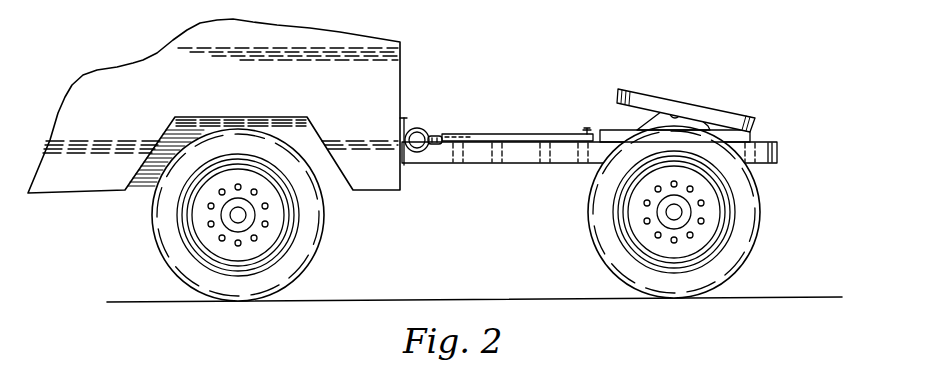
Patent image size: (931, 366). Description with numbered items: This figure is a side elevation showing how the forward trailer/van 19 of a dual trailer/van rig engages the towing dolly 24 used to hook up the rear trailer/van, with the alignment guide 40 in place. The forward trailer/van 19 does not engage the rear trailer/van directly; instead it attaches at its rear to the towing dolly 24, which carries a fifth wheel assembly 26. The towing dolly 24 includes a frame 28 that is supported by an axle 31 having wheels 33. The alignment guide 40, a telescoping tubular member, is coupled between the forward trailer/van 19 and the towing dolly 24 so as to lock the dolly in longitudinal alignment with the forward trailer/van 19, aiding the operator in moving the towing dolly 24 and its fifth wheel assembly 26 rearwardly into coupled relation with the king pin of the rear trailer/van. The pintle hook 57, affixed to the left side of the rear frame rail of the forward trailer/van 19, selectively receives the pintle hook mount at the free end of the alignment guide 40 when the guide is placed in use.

The forward trailer/van 19 is at (212, 91).
The alignment guide 40 is at (485, 128).
The pintle hook 57 is at (410, 170).
The frame 28 is at (507, 153).
The towing dolly 24 is at (608, 174).
The fifth wheel assembly 26 is at (638, 87).
The axle 31 is at (676, 212).
The wheels 33 is at (702, 212).